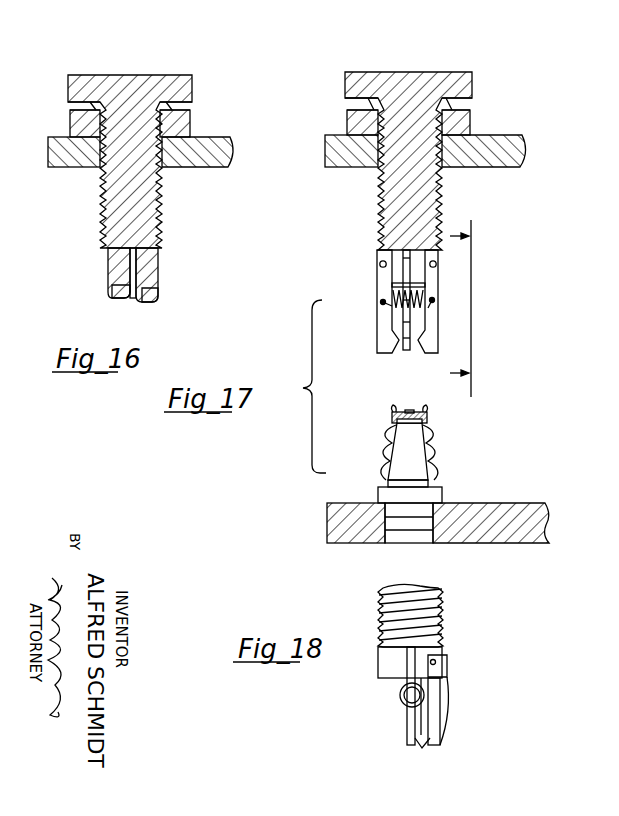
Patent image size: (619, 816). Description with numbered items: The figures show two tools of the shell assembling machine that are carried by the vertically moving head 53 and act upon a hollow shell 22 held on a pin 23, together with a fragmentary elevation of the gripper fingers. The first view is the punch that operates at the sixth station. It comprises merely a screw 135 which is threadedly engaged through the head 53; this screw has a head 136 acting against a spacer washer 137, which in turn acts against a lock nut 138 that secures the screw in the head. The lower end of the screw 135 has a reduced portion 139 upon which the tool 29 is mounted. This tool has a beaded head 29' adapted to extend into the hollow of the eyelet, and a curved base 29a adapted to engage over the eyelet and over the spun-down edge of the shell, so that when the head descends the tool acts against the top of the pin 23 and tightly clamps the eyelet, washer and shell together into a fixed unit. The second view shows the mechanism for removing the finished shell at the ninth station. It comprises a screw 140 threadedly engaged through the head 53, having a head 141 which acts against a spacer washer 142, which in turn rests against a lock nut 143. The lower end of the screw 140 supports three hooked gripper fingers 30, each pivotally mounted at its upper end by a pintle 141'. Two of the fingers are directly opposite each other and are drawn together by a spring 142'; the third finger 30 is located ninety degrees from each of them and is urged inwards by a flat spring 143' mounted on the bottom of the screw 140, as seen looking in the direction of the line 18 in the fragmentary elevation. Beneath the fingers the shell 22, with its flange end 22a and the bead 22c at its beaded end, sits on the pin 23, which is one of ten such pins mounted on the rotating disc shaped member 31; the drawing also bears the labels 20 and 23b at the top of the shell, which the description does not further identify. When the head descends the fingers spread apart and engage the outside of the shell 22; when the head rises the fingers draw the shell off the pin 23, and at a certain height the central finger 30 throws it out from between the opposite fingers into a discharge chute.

In FIG. 16, the head 136 is at (192, 78).
In FIG. 16, the spacer washer 137 is at (170, 106).
In FIG. 16, the lock nut 138 is at (190, 126).
In FIG. 16, the head 53 is at (226, 152).
In FIG. 17, the head 53 is at (518, 153).
In FIG. 16, the screw 135 is at (156, 218).
In FIG. 16, the reduced portion 139 is at (150, 268).
In FIG. 16, the tool 29 is at (98, 273).
In FIG. 16, the curved base 29a is at (124, 300).
In FIG. 16, the beaded head 29' is at (158, 306).
In FIG. 17, the head 141 is at (431, 153).
In FIG. 17, the spacer washer 142 is at (431, 102).
In FIG. 17, the lock nut 143 is at (432, 122).
In FIG. 17, the screw 140 is at (384, 205).
In FIG. 18, the screw 140 is at (425, 608).
In FIG. 17, the line 18— 18 is at (474, 308).
In FIG. 17, the pintle 141' is at (388, 263).
In FIG. 17, the spring 142' is at (381, 309).
In FIG. 18, the spring 142' is at (389, 701).
In FIG. 17, the hooked gripper fingers 30 is at (432, 324).
In FIG. 18, the hooked gripper fingers 30 is at (410, 707).
In FIG. 17, the contact 20 is at (407, 410).
In FIG. 17, the cap 23b is at (427, 416).
In FIG. 17, the bead 22c is at (392, 418).
In FIG. 17, the hollow shell 22 is at (436, 446).
In FIG. 17, the flange end 22a is at (436, 476).
In FIG. 17, the pin 23 is at (430, 494).
In FIG. 17, the disc shaped member 31 is at (485, 510).
In FIG. 18, the flat spring 143' is at (462, 700).